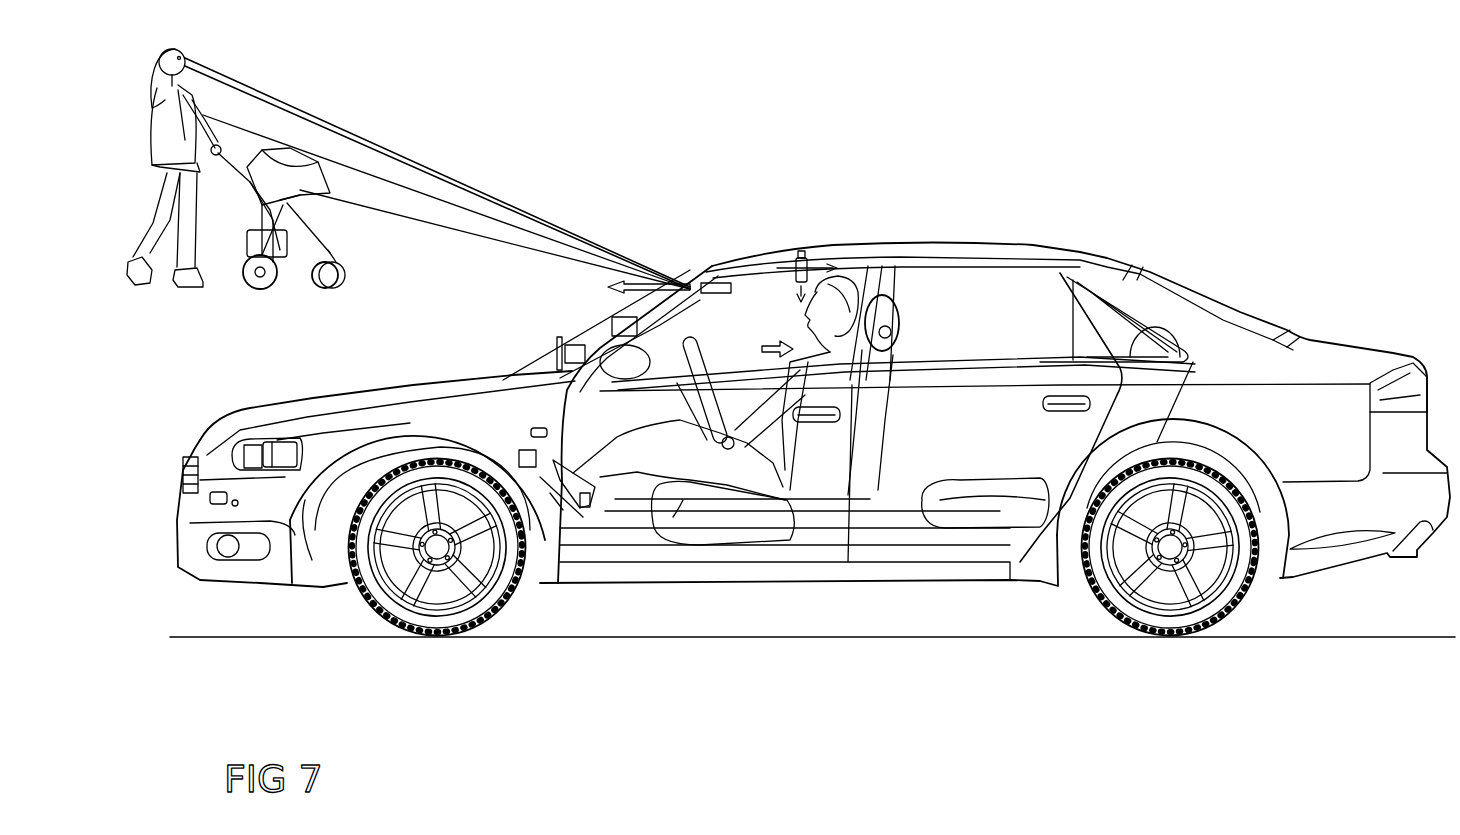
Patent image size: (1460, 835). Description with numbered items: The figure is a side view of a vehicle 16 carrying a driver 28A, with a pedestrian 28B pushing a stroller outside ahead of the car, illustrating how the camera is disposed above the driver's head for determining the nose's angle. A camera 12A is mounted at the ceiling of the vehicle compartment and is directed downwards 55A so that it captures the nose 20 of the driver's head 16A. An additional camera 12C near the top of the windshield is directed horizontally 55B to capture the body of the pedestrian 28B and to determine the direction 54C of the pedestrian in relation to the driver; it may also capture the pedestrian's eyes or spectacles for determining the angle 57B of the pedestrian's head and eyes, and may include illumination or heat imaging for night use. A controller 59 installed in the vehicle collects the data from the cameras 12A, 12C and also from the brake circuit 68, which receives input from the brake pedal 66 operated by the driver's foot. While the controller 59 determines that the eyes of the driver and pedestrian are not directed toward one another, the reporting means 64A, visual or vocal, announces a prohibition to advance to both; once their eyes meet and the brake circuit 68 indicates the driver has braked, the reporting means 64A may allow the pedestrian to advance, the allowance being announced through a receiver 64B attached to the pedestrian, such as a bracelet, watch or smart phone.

The vehicle 16 is at (1347, 439).
The driver's head 16A is at (853, 292).
The nose 20 is at (808, 322).
The driver 28A is at (754, 350).
The pedestrian 28B is at (150, 110).
The camera 12A is at (798, 255).
The camera 12C is at (726, 283).
The vertical directing of camera 55A is at (806, 292).
The horizontal directing of camera 55B is at (620, 313).
The angle of nose of pedestrian's head 57B is at (236, 88).
The direction of pedestrian in relation to driver 54C is at (445, 213).
The controller 59 is at (588, 327).
The reporting means 64A is at (557, 352).
The receiver 64B is at (216, 158).
The brake pedal 66 is at (565, 497).
The brake circuit 68 is at (540, 455).